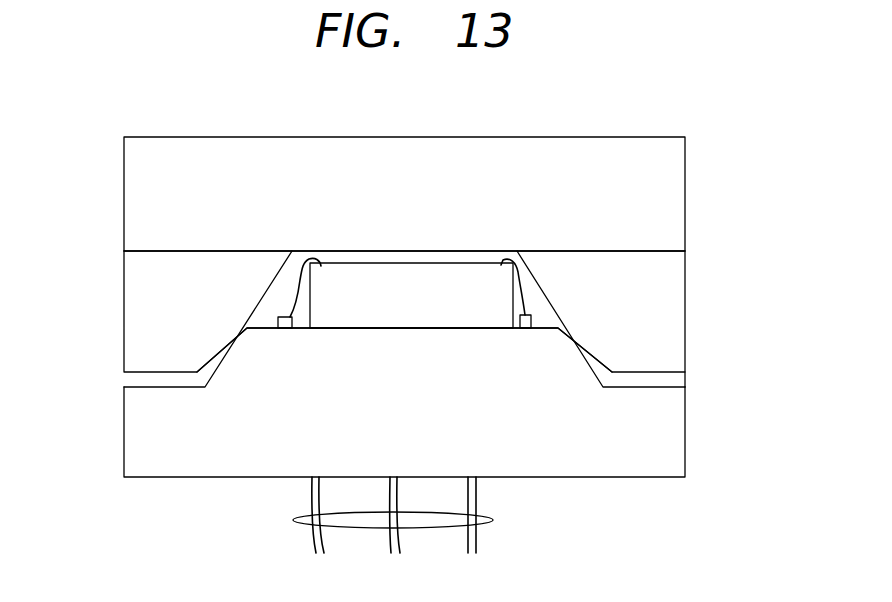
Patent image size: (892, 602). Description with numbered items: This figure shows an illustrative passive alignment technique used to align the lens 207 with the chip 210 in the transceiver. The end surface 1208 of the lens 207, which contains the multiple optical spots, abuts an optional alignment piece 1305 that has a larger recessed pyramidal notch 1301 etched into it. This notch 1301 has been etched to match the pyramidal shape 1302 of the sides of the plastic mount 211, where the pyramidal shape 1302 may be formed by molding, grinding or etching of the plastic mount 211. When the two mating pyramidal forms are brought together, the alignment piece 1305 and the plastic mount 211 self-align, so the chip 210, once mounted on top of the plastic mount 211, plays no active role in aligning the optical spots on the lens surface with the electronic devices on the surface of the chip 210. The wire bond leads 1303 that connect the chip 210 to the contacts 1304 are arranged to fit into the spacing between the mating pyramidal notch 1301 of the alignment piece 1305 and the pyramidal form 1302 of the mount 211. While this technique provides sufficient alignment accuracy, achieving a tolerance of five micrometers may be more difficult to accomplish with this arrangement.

The lens 207 is at (668, 201).
The chip 210 is at (433, 312).
The plastic mount 211 is at (668, 433).
The end surface 1208 is at (467, 251).
The recessed pyramidal notch 1301 is at (590, 345).
The pyramidal shape 1302 is at (580, 358).
The wire bond leads 1303 is at (300, 295).
The contacts 1304 is at (493, 520).
The alignment piece 1305 is at (668, 277).